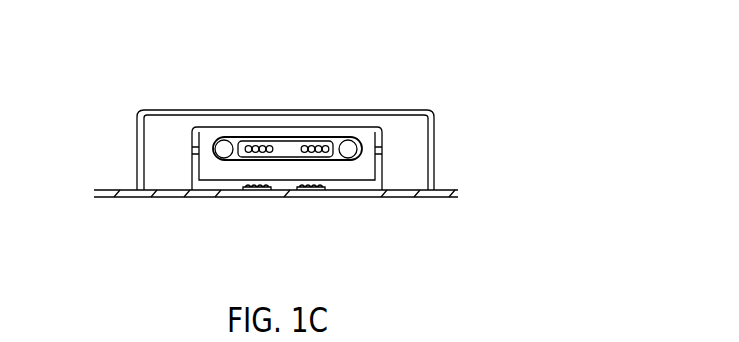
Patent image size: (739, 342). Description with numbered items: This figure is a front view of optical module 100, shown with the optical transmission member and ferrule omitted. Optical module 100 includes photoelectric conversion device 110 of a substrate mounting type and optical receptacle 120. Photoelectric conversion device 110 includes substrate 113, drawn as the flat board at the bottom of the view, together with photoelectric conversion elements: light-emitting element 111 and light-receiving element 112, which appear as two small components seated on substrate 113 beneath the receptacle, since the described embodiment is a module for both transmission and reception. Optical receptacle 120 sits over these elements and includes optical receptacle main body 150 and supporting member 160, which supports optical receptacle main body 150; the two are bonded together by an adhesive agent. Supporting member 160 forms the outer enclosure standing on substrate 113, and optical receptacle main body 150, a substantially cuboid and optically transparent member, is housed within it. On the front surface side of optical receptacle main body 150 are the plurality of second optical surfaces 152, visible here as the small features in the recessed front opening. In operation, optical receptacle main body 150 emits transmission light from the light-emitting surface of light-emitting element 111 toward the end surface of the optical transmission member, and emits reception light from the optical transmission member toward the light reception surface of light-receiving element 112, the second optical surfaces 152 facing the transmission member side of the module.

The optical module 100 is at (452, 100).
The photoelectric conversion device 110 is at (258, 238).
The light-emitting element 111 is at (271, 189).
The light-receiving element 112 is at (324, 189).
The substrate 113 is at (356, 190).
The optical receptacle 120 is at (237, 238).
The optical receptacle main body 150 is at (213, 170).
The second optical surfaces 152 is at (303, 150).
The supporting member 160 is at (164, 178).